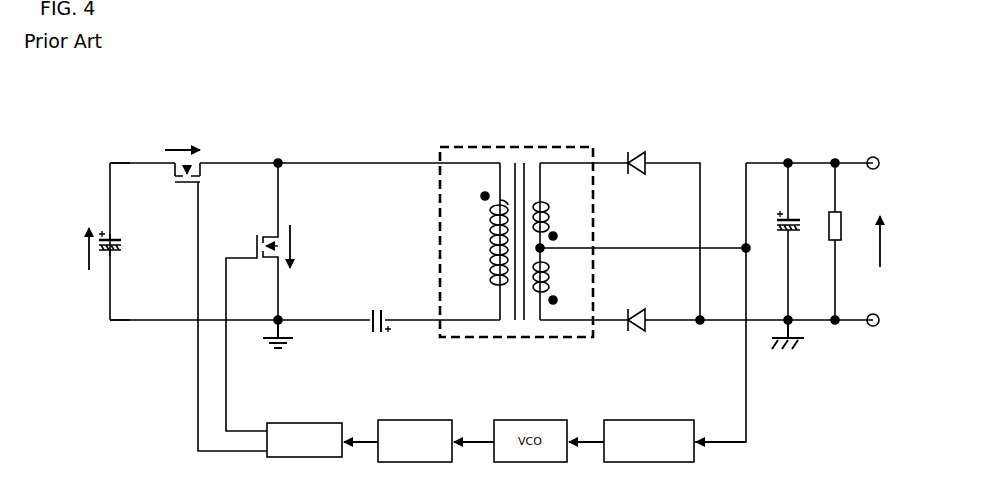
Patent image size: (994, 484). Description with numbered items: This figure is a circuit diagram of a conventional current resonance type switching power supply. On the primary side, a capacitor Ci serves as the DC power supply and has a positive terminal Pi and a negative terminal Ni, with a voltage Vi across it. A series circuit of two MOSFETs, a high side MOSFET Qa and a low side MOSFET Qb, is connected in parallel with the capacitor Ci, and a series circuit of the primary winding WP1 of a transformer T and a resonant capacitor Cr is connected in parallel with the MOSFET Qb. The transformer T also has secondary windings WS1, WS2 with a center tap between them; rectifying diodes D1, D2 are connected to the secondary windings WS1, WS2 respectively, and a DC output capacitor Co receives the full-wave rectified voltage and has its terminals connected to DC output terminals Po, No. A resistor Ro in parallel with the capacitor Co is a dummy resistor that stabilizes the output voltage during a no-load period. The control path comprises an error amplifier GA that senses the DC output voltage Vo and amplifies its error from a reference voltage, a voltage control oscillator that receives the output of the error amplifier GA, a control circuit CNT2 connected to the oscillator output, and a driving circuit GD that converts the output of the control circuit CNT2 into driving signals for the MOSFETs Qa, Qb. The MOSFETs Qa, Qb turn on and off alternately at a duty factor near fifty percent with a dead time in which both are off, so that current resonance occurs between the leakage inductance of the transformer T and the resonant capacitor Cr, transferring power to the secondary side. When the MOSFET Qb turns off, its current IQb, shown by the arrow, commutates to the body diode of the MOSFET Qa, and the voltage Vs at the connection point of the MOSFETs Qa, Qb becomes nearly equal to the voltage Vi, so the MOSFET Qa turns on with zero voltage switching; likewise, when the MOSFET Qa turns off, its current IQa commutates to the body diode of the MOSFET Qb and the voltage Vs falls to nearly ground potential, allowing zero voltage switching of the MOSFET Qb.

The positive terminal Pi is at (108, 164).
The negative terminal Ni is at (108, 321).
The capacitor Ci is at (116, 238).
The voltage of the capacitor Ci Vi is at (78, 249).
The high side MOSFET Qa is at (211, 307).
The low side MOSFET Qb is at (249, 297).
The current flowing in the MOSFET Qa IQa is at (182, 138).
The current flowing in the MOSFET Qb IQb is at (305, 246).
The voltage at the connection point between the MOSFETs Vs is at (274, 153).
The resonant capacitor Cr is at (381, 310).
The transformer T is at (516, 231).
The primary winding WP1 is at (478, 241).
The secondary winding WS1 is at (557, 205).
The secondary winding WS2 is at (557, 284).
The rectifying diode D1 is at (636, 174).
The rectifying diode D2 is at (636, 311).
The DC output capacitor Co is at (794, 241).
The resistor Ro is at (846, 241).
The DC output terminal Po is at (886, 164).
The DC output terminal No is at (887, 321).
The DC output voltage Vo is at (892, 241).
The driving circuit GD is at (303, 422).
The control circuit CNT2 is at (410, 420).
The error amplifier GA is at (645, 420).